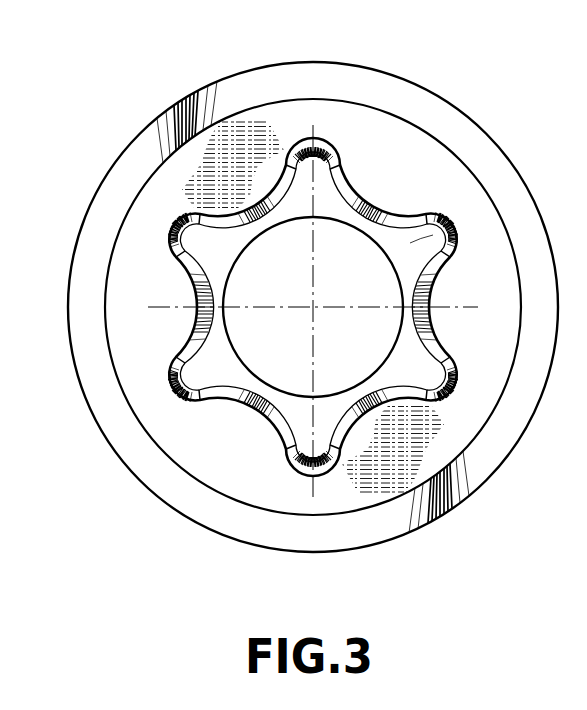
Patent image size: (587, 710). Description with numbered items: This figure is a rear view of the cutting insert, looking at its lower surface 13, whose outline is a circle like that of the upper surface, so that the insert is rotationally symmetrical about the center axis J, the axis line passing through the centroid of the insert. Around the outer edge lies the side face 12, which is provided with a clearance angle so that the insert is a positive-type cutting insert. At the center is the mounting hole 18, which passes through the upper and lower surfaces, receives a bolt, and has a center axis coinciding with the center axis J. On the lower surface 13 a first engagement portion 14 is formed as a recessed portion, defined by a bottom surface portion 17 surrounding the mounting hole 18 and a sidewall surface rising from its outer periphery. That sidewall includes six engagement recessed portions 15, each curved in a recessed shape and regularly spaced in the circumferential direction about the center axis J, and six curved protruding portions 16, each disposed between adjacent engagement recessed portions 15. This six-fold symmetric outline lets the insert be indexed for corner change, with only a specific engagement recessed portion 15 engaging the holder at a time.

The side face 12 is at (148, 448).
The lower surface 13 is at (135, 337).
The first engagement portion 14 is at (295, 129).
The engagement recessed portion 15 is at (360, 190).
The curved protruding portion 16 is at (410, 211).
The bottom surface portion 17 is at (455, 213).
The mounting hole 18 is at (381, 250).
The center axis J is at (313, 309).